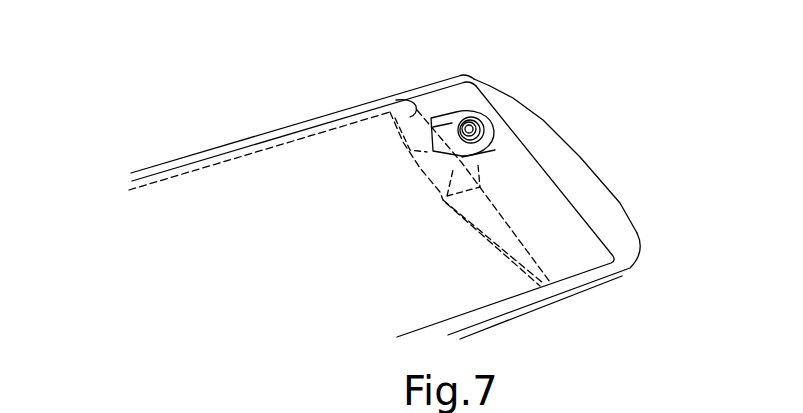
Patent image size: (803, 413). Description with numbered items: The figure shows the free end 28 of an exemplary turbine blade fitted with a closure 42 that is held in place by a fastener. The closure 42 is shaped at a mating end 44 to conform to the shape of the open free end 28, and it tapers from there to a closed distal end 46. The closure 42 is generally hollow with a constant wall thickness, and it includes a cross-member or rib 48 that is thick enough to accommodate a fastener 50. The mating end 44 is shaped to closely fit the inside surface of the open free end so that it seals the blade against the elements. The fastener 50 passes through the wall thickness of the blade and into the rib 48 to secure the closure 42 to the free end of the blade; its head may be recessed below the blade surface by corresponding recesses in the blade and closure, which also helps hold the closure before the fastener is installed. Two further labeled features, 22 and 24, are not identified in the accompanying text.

The free end 28 is at (155, 54).
The display cover layer 22 is at (277, 130).
The housing bottom edge 24 is at (537, 306).
The closure 42 is at (583, 164).
The mating end 44 is at (395, 108).
The closed distal end 46 is at (627, 214).
The rib 48 is at (428, 147).
The fastener 50 is at (481, 128).